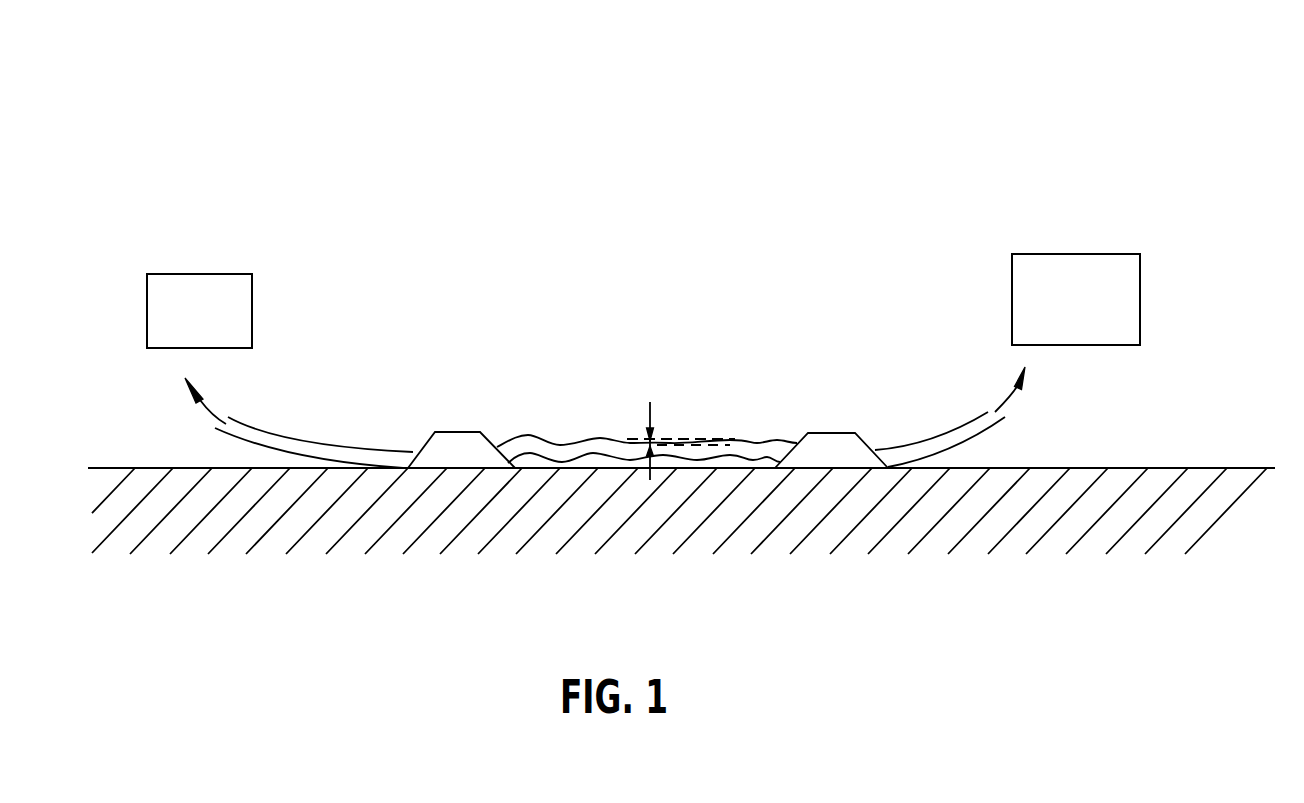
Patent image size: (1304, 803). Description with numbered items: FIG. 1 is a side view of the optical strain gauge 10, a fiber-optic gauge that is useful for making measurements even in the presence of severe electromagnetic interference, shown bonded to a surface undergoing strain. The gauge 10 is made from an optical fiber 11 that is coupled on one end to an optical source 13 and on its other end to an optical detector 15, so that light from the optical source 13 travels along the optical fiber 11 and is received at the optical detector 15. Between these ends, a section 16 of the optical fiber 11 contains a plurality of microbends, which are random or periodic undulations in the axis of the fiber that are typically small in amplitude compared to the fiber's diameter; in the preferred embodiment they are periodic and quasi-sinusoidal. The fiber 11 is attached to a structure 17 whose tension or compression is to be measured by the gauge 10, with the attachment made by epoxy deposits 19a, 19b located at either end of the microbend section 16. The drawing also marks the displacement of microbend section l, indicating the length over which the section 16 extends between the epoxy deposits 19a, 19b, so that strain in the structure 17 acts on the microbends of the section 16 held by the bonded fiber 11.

The optical strain gauge 10 is at (610, 105).
The optical fiber 11 is at (290, 435).
The optical source 13 is at (155, 308).
The optical detector 15 is at (1128, 335).
The section 16 is at (597, 437).
The structure 17 is at (735, 522).
The epoxy deposit 19a is at (468, 432).
The epoxy deposit 19b is at (832, 433).
The displacement of microbend section l is at (653, 417).